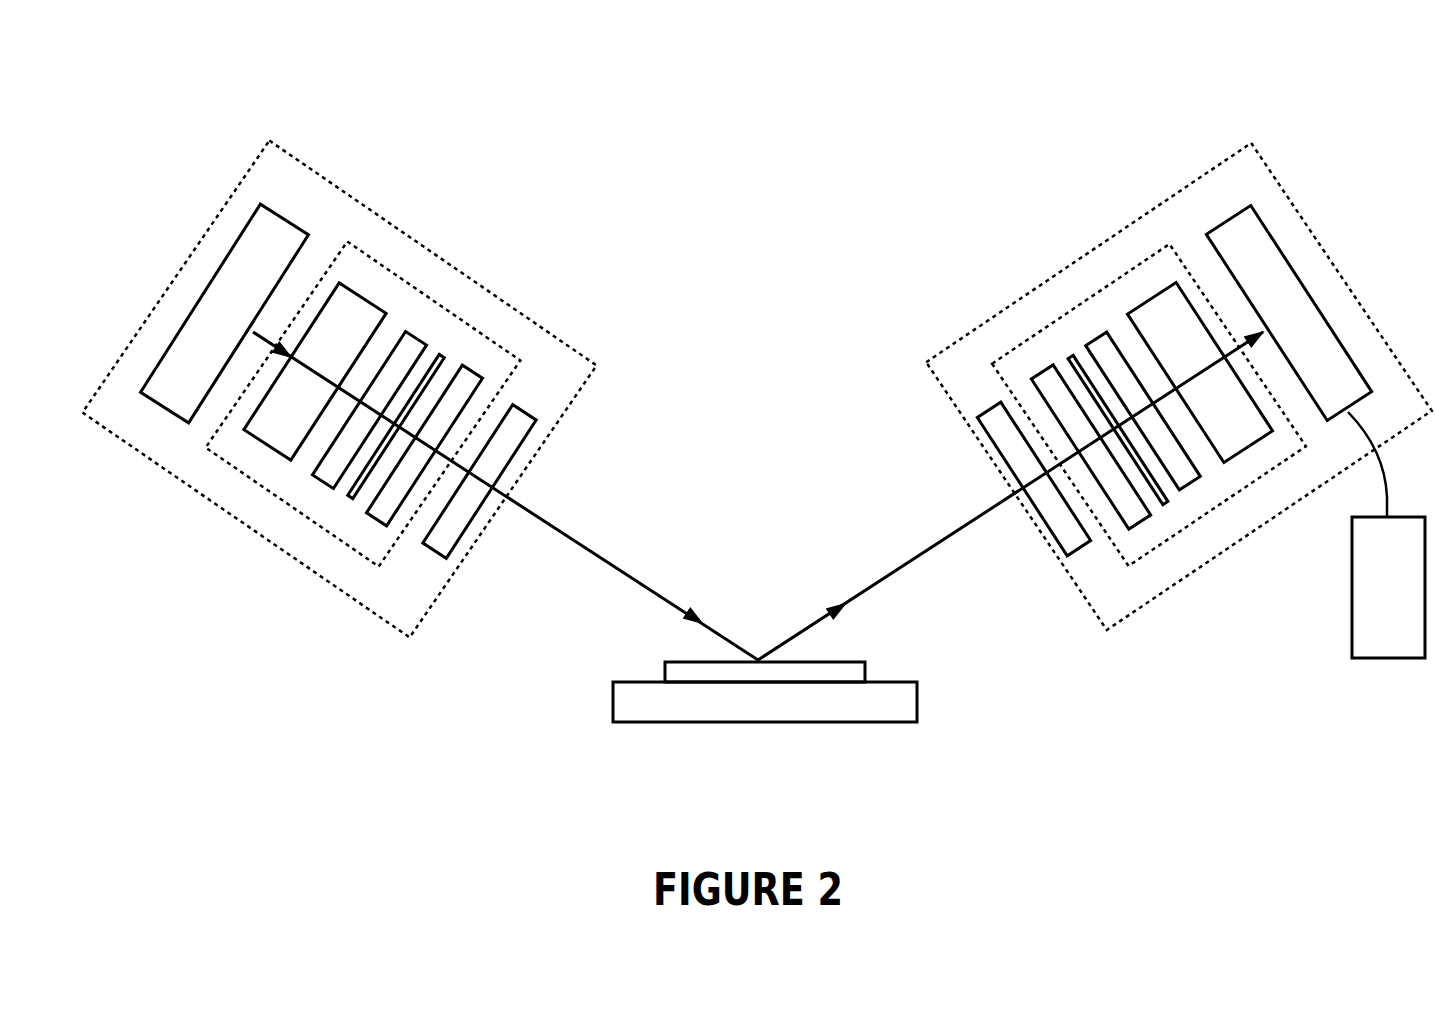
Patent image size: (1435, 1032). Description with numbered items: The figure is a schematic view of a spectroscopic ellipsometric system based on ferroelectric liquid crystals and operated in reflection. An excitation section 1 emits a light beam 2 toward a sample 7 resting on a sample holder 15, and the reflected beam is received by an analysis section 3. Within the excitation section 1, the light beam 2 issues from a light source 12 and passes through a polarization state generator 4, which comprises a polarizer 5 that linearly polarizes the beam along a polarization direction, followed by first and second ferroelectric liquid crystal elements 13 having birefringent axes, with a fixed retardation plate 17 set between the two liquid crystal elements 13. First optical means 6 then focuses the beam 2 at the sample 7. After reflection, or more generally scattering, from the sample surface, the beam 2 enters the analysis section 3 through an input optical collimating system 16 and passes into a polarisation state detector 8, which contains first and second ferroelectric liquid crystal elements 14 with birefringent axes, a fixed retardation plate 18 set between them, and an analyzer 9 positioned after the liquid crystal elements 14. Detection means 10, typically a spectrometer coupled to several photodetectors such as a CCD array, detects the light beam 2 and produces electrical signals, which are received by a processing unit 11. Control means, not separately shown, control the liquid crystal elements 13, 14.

The excitation section 1 is at (315, 180).
The light beam 2 is at (567, 533).
The analysis section 3 is at (1165, 210).
The polarization state generator 4 is at (235, 472).
The polarizer 5 is at (368, 297).
The first optical means 6 is at (527, 408).
The sample 7 is at (663, 670).
The polarisation state detector 8 is at (1228, 500).
The analyzer 9 is at (1143, 302).
The detection means 10 is at (1245, 207).
The processing unit 11 is at (1352, 658).
The light source 12 is at (160, 410).
The ferroelectric liquid crystal elements 13 is at (418, 337).
The ferroelectric liquid crystal elements 14 is at (1088, 335).
The sample holder 15 is at (917, 698).
The input optical (collimating) system 16 is at (1003, 410).
The fixed retardation plate 17 is at (353, 500).
The fixed retardation plate 18 is at (1158, 498).